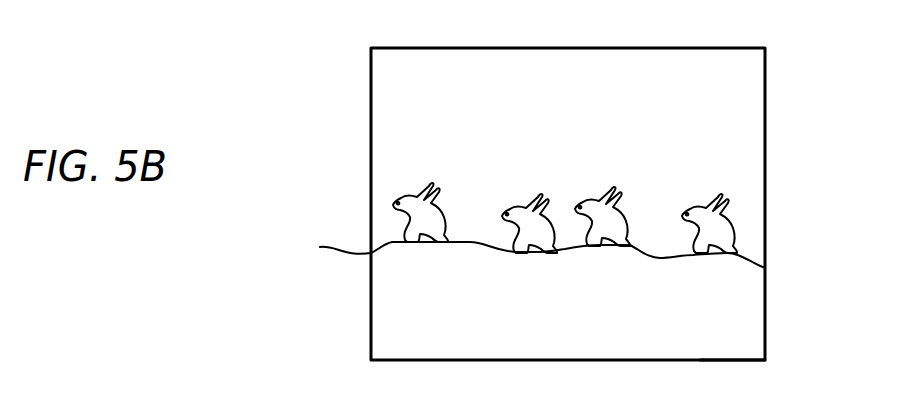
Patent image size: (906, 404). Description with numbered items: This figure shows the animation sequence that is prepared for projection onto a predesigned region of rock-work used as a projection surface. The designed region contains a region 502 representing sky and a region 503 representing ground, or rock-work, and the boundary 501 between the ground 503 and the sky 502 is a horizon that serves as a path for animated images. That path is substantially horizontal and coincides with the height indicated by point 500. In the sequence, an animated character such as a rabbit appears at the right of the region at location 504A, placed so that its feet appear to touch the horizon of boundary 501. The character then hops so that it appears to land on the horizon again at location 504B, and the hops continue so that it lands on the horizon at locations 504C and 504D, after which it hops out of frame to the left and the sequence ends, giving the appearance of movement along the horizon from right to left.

The point 500 is at (514, 249).
The boundary 501 is at (535, 255).
The region representing sky 502 is at (672, 70).
The region representing ground 503 is at (733, 300).
The location 504A is at (700, 198).
The location 504B is at (596, 192).
The location 504C is at (522, 196).
The location 504D is at (415, 190).